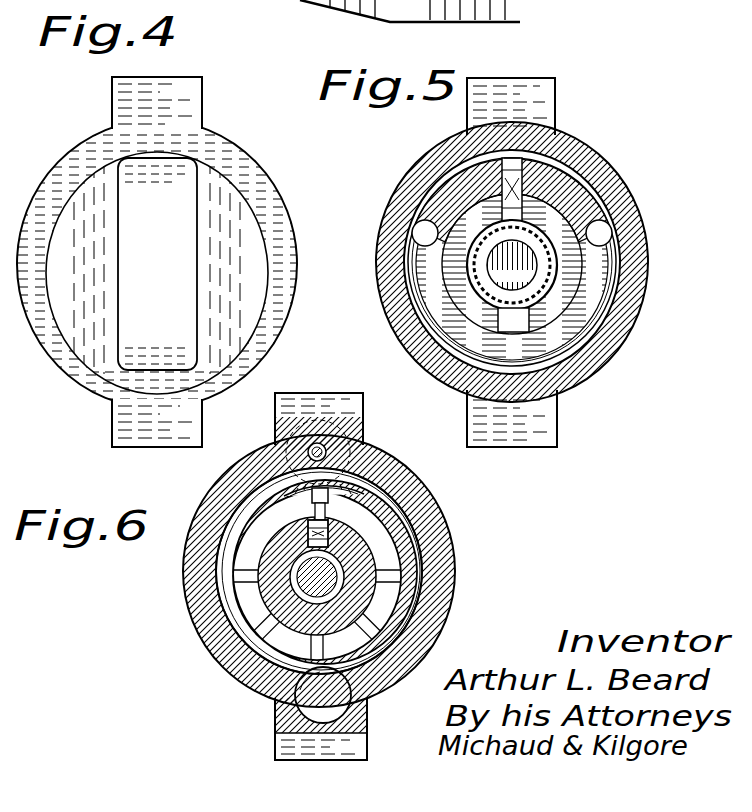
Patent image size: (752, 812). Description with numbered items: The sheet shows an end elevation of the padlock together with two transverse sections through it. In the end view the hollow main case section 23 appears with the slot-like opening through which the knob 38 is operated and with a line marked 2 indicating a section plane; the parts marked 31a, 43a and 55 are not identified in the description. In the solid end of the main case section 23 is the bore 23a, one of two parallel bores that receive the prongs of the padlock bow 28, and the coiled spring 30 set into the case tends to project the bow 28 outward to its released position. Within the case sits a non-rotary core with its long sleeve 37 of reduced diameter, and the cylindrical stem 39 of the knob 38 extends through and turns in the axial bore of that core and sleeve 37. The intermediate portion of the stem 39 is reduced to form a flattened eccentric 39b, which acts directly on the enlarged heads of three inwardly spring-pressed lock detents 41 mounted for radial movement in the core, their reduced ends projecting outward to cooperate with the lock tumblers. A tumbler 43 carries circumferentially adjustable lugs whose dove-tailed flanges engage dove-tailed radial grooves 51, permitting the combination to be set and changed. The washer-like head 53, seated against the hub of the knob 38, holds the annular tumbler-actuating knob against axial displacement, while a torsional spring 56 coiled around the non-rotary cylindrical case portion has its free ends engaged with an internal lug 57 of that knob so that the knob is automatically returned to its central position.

In FIG. 4, the section line 2- 2 is at (157, 470).
In FIG. 4, the main case section 23 is at (245, 151).
In FIG. 5, the main case section 23 is at (410, 172).
In FIG. 6, the main case section 23 is at (453, 574).
In FIG. 6, the bore 23a is at (317, 700).
In FIG. 6, the padlock bow 28 is at (365, 452).
In FIG. 6, the coiled spring 30 is at (326, 449).
In FIG. 6, the pin 31a is at (330, 483).
In FIG. 5, the sleeve 37 is at (526, 248).
In FIG. 4, the knob 38 is at (140, 228).
In FIG. 5, the cylindrical stem 39 is at (548, 221).
In FIG. 6, the cylindrical stem 39 is at (250, 633).
In FIG. 6, the flattened eccentric 39b is at (340, 593).
In FIG. 6, the lock detent 41 is at (325, 541).
In FIG. 6, the tumbler 43 is at (356, 496).
In FIG. 6, the cap block 43a is at (284, 493).
In FIG. 6, the dove-tailed radial groove 51 is at (370, 521).
In FIG. 4, the washer-like head 53 is at (248, 246).
In FIG. 5, the lugs 55 is at (425, 233).
In FIG. 5, the torsional spring 56 is at (523, 172).
In FIG. 5, the internal lug 57 is at (545, 129).